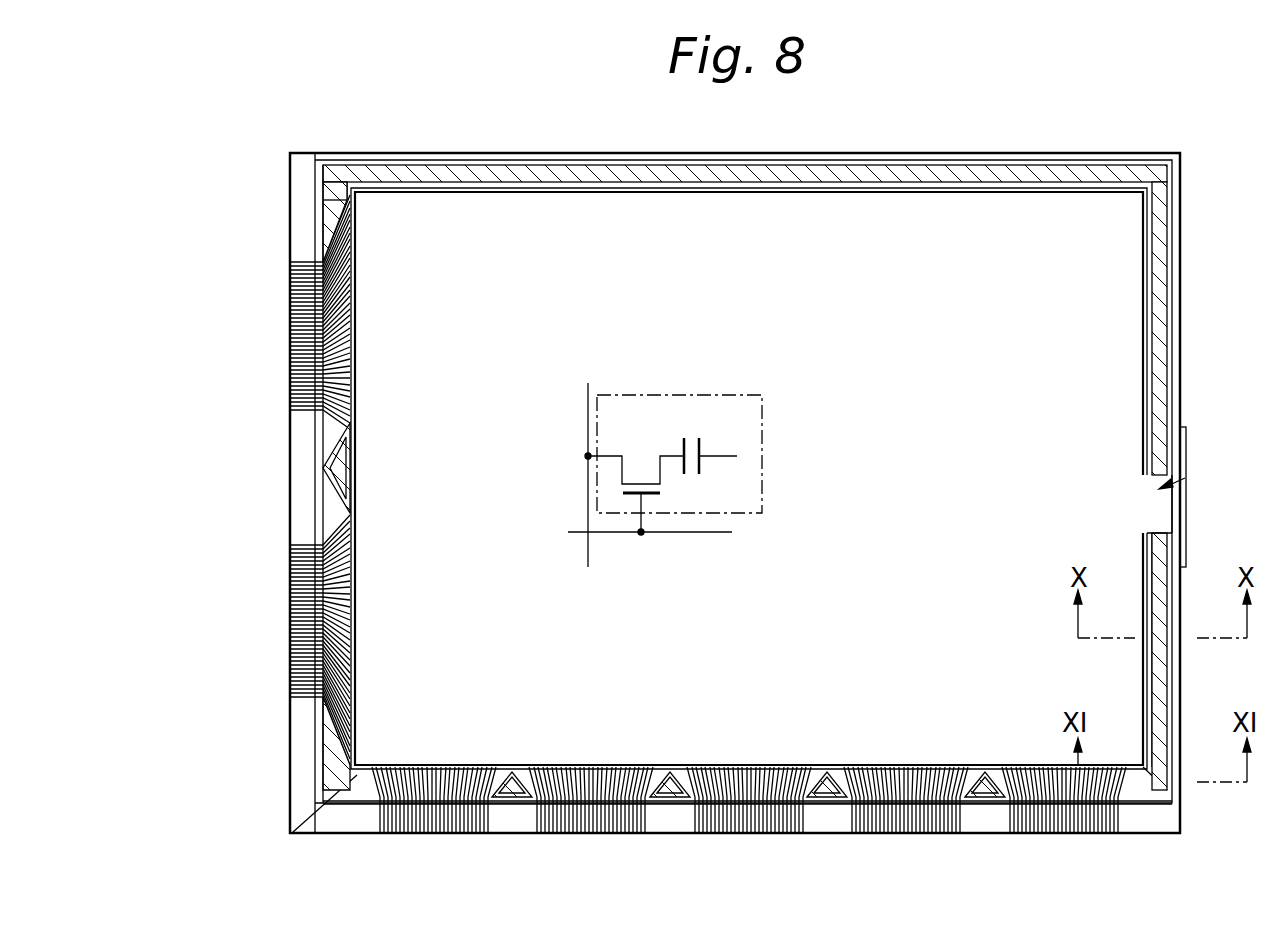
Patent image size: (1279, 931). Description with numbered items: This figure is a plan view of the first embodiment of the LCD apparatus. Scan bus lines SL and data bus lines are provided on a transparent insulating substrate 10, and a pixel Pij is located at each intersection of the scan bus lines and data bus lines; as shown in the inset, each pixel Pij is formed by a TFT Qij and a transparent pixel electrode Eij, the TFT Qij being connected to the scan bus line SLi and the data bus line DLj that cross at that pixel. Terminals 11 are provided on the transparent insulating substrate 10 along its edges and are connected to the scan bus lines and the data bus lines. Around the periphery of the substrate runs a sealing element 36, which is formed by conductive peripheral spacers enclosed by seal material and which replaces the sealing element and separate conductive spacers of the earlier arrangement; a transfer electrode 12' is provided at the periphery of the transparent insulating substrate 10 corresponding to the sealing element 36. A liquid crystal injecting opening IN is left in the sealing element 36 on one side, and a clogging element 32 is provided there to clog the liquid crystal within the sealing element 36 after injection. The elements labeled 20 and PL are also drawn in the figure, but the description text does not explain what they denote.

The transparent insulating substrate 10 is at (340, 830).
The terminals 11 is at (280, 260).
The transfer electrode 12' is at (739, 497).
The counter substrate 20 is at (318, 782).
The pixel region boundary PL is at (296, 833).
The scan bus lines SL is at (330, 226).
The clogging element 32 is at (1186, 428).
The liquid crystal injecting opening IN is at (1185, 478).
The sealing element 36 is at (1160, 531).
The pixel Pij is at (697, 394).
The TFT Qij is at (636, 476).
The transparent pixel electrode Eij is at (710, 440).
The scan bus line SLi is at (624, 533).
The data bus line DLj is at (586, 495).